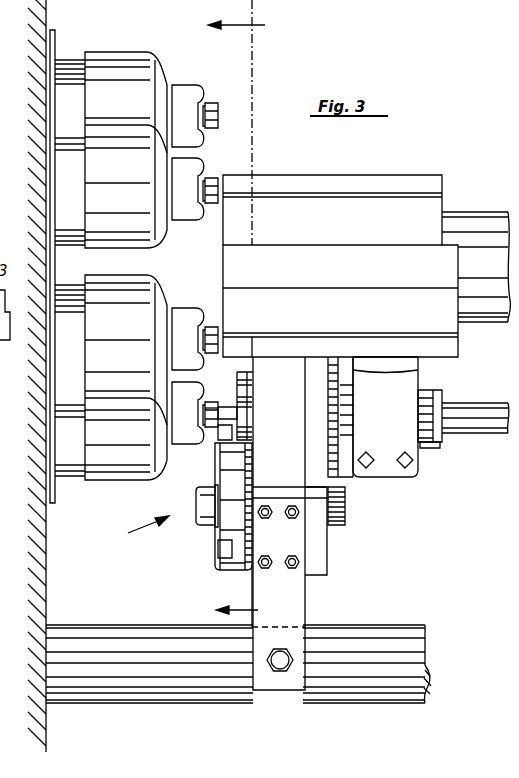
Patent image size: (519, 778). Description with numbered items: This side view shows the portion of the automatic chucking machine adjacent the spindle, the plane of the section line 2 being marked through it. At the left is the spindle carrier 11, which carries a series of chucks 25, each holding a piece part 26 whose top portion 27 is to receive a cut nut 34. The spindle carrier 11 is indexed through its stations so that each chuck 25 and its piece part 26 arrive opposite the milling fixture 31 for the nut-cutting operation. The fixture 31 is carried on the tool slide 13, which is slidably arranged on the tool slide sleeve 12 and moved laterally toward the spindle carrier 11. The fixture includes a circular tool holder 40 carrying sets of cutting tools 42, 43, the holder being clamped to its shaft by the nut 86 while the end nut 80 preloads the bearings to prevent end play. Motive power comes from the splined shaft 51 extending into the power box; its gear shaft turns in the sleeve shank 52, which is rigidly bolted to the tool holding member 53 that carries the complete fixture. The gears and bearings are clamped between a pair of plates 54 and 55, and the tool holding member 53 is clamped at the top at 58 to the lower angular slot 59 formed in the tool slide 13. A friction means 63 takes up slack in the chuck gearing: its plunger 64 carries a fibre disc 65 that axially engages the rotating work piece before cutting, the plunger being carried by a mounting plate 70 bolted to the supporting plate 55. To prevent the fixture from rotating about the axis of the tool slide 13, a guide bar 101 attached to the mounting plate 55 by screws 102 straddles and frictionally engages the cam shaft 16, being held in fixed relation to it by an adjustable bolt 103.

The section line 2- 2 is at (256, 313).
The spindle carrier 11 is at (57, 36).
The tool slide sleeve 12 is at (464, 228).
The tool slide 13 is at (335, 216).
The cam shaft 16 is at (165, 645).
The chuck 25 is at (109, 62).
The piece part 26 is at (183, 103).
The top portion of piece part 27 is at (211, 180).
The milling fixture 31 is at (138, 533).
The nut 34 is at (212, 105).
The circular tool holder 40 is at (232, 530).
The cutting tool 42 is at (219, 434).
The cutting tool 43 is at (222, 552).
The splined shaft 51 is at (478, 426).
The sleeve shank 52 is at (432, 447).
The tool holding member 53 is at (402, 386).
The plate 54 is at (320, 565).
The cutting tool supporting plate 55 is at (283, 388).
The clamp 58 is at (383, 362).
The angular slot 59 is at (347, 357).
The friction means 63 is at (205, 411).
The plunger 64 is at (239, 347).
The fibre disc 65 is at (239, 413).
The mounting plate 70 is at (250, 388).
The end nut 80 is at (346, 503).
The nut 86 is at (198, 503).
The guide bar 101 is at (294, 620).
The screws 102 is at (302, 560).
The adjustable bolt 103 is at (283, 673).